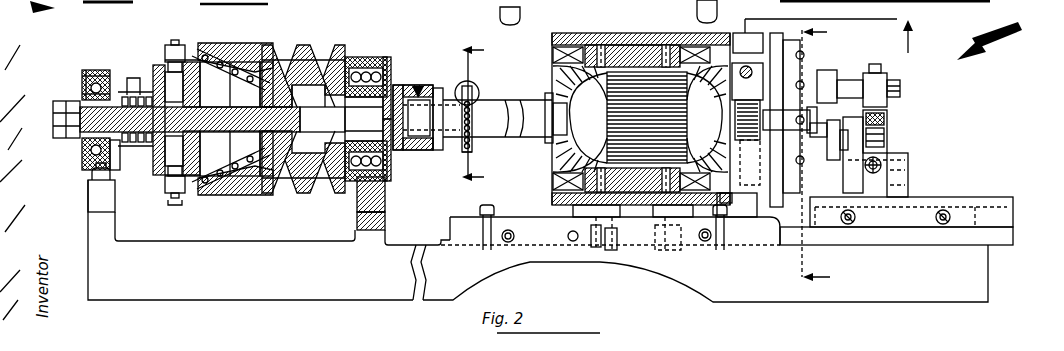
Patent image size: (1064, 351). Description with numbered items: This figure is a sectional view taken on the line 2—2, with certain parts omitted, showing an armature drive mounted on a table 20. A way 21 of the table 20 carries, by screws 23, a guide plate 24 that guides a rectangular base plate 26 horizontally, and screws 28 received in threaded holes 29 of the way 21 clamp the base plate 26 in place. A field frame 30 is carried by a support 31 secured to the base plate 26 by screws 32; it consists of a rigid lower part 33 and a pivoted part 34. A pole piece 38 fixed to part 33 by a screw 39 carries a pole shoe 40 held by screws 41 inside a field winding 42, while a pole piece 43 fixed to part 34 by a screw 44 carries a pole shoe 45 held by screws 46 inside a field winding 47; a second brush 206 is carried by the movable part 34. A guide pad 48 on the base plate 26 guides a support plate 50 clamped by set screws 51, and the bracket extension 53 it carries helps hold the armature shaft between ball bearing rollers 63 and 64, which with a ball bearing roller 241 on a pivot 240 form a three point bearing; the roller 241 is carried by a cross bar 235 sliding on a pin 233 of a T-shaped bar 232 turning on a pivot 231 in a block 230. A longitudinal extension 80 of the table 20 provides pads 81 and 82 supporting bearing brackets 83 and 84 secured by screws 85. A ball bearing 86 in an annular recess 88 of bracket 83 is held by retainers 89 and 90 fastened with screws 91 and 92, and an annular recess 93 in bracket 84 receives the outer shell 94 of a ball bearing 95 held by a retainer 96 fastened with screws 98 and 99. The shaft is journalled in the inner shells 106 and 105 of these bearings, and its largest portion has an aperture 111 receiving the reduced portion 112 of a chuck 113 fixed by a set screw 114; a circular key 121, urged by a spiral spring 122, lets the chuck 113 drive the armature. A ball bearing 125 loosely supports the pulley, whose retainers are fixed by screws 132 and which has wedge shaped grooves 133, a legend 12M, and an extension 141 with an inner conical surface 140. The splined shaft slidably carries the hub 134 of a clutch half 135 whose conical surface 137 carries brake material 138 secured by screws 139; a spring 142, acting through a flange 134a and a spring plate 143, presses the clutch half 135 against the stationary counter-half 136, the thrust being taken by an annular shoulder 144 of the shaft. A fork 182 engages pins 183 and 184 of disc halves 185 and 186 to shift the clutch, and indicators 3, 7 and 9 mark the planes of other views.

The table 20 is at (975, 285).
The way 21 is at (632, 45).
The screws 23 is at (485, 215).
The guide plate 24 is at (775, 245).
The base plate 26 is at (1000, 248).
The screws 28 is at (500, 15).
The threaded holes 29 is at (592, 240).
The field frame 30 is at (565, 150).
The support 31 is at (577, 208).
The screws 32 is at (668, 230).
The stationary field frame part 33 is at (556, 196).
The movable field frame part 34 is at (555, 48).
The pole piece 38 is at (655, 225).
The screw 39 is at (607, 225).
The pole shoe 40 is at (605, 160).
The screws 41 is at (720, 110).
The field winding 42 is at (556, 180).
The pole piece 43 is at (668, 45).
The screw 44 is at (610, 30).
The pole shoe 45 is at (652, 45).
The screws 46 is at (602, 73).
The field winding 47 is at (700, 75).
The guide pad 48 is at (990, 200).
The support plate 50 is at (950, 212).
The set screws 51 is at (940, 222).
The extension 53 is at (890, 145).
The ball bearing roller 63 is at (832, 155).
The ball bearing roller 64 is at (870, 135).
The longitudinal extension 80 is at (378, 270).
The pad 81 is at (380, 218).
The pad 82 is at (105, 222).
The bearing bracket 83 is at (360, 215).
The bearing bracket 84 is at (100, 196).
The screws 85 is at (92, 176).
The ball bearing 86 is at (362, 100).
The annular recess 88 is at (386, 185).
The ball bearing retainer 89 is at (355, 185).
The ball bearing retainer 90 is at (388, 172).
The screws 91 is at (388, 62).
The screws 92 is at (360, 60).
The annular recess 93 is at (85, 72).
The outer shell 94 is at (84, 90).
The ball bearing 95 is at (82, 85).
The ball bearing retainer 96 is at (82, 93).
The screws 98 is at (82, 158).
The screws 99 is at (108, 158).
The inner shell 105 is at (364, 125).
The inner shell 106 is at (80, 136).
The aperture 111 is at (425, 95).
The reduced cylindrical portion 112 is at (420, 130).
The chuck 113 is at (445, 110).
The set screw 114 is at (418, 86).
The circular key 121 is at (472, 95).
The spiral spring 122 is at (468, 150).
The ball bearing 125 is at (290, 110).
The screws 132 is at (272, 45).
The wedge shaped circumferential grooves 133 is at (285, 200).
The internally splined hub 134 is at (198, 150).
The flange 134a is at (162, 80).
The clutch half 135 is at (193, 98).
The counter-half 136 is at (262, 200).
The conical surface 137 is at (190, 205).
The brake material 138 is at (210, 185).
The screws 139 is at (235, 190).
The inner conical surface 140 is at (225, 60).
The extension 141 is at (248, 55).
The spring 142 is at (158, 170).
The spring plate 143 is at (122, 66).
The annular shoulder 144 is at (288, 140).
The fork 182 is at (176, 195).
The pin 183 is at (176, 40).
The pin 184 is at (172, 200).
The disc half 185 is at (170, 45).
The disc half 186 is at (165, 195).
The second brush 206 is at (765, 80).
The block 230 is at (895, 175).
The pivot 231 is at (895, 160).
The T-shaped bar 232 is at (880, 125).
The pin 233 is at (876, 64).
The cross bar 235 is at (870, 85).
The pivot 240 is at (902, 88).
The ball bearing roller 241 is at (827, 75).
The pulley 12M is at (320, 32).
The section line 2— 2 is at (815, 118).
The section line 3 is at (811, 159).
The view arrow 7 is at (989, 49).
The section line 9 is at (483, 116).